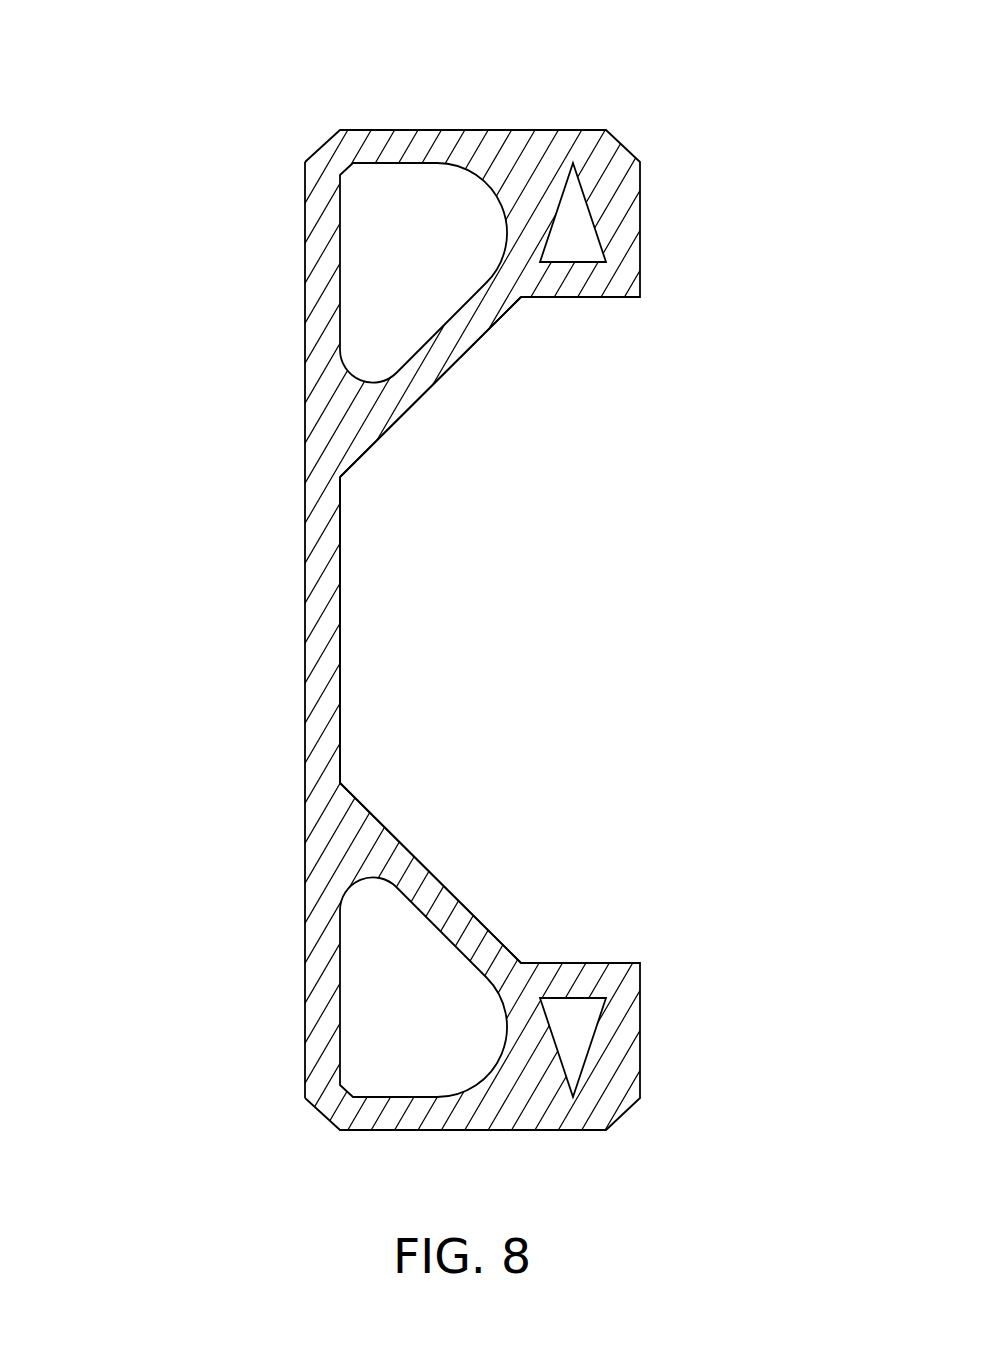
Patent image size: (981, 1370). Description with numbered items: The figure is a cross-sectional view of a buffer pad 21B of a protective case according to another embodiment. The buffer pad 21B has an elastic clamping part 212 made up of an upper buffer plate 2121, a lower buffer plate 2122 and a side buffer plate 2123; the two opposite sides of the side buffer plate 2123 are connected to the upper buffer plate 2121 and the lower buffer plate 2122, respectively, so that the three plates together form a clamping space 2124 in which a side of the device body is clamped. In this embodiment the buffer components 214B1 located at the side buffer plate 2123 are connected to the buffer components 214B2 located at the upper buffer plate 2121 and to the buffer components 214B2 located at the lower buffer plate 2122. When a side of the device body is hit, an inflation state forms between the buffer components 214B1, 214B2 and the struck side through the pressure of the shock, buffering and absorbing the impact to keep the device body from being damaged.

The buffer pad 21B is at (513, 123).
The elastic clamping part 212 is at (112, 583).
The upper buffer plate 2121 is at (440, 150).
The side buffer plate 2123 is at (327, 629).
The lower buffer plate 2122 is at (447, 1112).
The buffer components 214B1 is at (437, 355).
The buffer components 214B2 is at (618, 210).
The clamping space 2124 is at (575, 589).